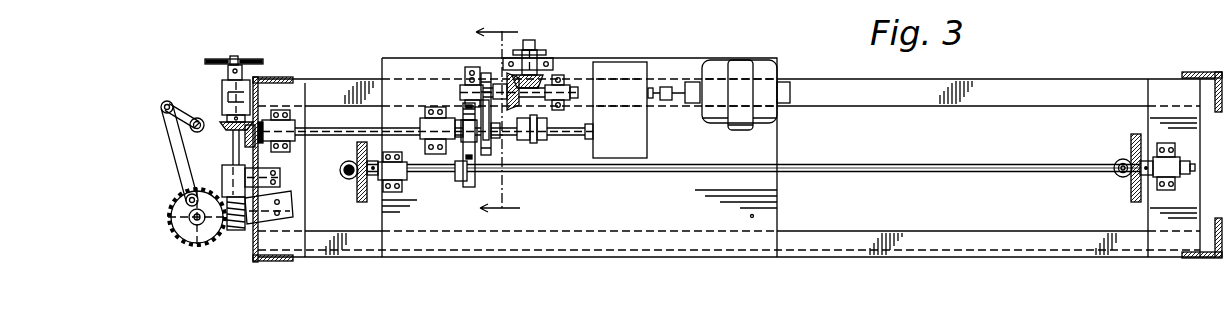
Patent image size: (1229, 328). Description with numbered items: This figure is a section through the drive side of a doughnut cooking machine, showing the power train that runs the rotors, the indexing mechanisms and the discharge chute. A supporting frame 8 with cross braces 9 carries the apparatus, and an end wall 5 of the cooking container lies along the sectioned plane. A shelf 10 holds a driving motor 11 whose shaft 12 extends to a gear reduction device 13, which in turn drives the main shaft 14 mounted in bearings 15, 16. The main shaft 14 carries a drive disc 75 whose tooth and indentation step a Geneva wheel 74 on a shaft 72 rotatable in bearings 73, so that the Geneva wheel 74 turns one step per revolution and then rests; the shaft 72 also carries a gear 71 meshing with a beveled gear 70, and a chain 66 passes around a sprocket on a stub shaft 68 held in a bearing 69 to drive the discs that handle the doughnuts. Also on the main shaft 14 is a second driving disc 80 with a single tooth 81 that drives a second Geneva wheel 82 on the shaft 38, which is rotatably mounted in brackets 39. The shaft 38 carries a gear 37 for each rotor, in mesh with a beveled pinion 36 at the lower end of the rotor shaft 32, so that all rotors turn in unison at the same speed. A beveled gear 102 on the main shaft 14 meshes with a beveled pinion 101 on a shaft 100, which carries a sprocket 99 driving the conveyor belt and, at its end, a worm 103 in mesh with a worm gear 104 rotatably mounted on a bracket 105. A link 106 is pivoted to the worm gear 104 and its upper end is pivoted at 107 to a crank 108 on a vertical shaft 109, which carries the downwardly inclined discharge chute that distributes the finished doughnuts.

The end wall 5 is at (498, 119).
The supporting frame 8 is at (280, 78).
The cross brace 9 is at (866, 100).
The shelf 10 is at (770, 218).
The driving motor 11 is at (738, 72).
The shaft 12 is at (675, 84).
The gear reduction device 13 is at (642, 137).
The main shaft 14 is at (333, 129).
The bearing 15 is at (420, 125).
The bearing 16 is at (293, 128).
The shaft 32 is at (344, 170).
The beveled gear or pinion 36 is at (348, 178).
The gear 37 is at (358, 200).
The shaft 38 is at (924, 172).
The bracket 39 is at (380, 192).
The chain 66 is at (540, 58).
The stub shaft 68 is at (530, 40).
The bearing 69 is at (540, 75).
The beveled gear 70 is at (545, 80).
The gear 71 is at (500, 85).
The shaft 72 is at (535, 93).
The bearing 73 is at (468, 68).
The Geneva wheel 74 is at (507, 80).
The drive disc 75 is at (486, 160).
The second driving disc 80 is at (466, 145).
The tooth 81 is at (462, 104).
The second Geneva wheel 82 is at (467, 184).
The sprocket 99 is at (232, 57).
The shaft 100 is at (232, 157).
The beveled pinion 101 is at (223, 115).
The beveled gear 102 is at (243, 136).
The worm 103 is at (238, 232).
The worm gear 104 is at (193, 237).
The bracket 105 is at (252, 218).
The link 106 is at (180, 163).
The pivot 107 is at (163, 105).
The crank 108 is at (168, 117).
The shaft 109 is at (191, 129).